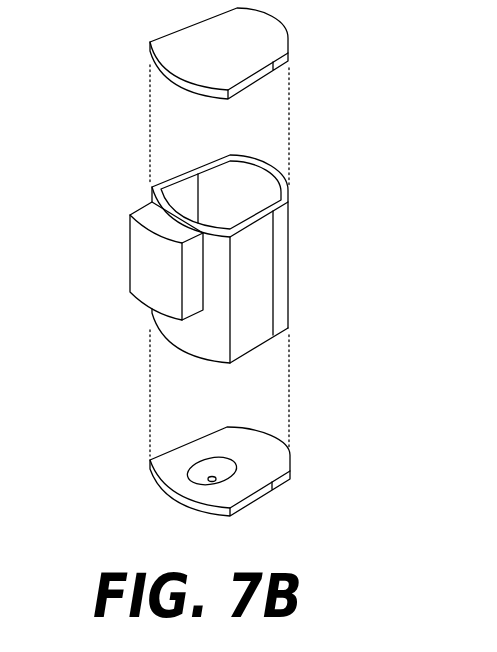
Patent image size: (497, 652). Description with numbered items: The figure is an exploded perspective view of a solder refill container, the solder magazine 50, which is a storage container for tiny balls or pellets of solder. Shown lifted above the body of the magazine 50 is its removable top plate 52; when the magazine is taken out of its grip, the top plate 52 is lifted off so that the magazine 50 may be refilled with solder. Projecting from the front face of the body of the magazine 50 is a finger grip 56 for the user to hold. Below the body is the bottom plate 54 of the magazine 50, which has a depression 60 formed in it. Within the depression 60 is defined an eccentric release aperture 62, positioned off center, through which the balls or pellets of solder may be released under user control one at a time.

The solder magazine 50 is at (290, 240).
The removable top plate 52 is at (270, 35).
The bottom plate 54 is at (165, 463).
The finger grip 56 is at (140, 262).
The depression 60 is at (218, 457).
The eccentric release aperture 62 is at (222, 478).